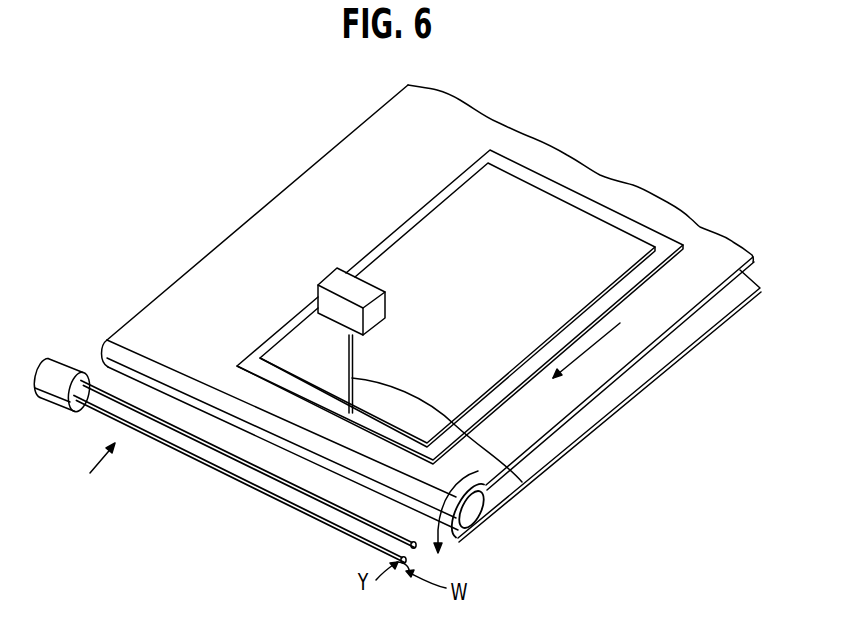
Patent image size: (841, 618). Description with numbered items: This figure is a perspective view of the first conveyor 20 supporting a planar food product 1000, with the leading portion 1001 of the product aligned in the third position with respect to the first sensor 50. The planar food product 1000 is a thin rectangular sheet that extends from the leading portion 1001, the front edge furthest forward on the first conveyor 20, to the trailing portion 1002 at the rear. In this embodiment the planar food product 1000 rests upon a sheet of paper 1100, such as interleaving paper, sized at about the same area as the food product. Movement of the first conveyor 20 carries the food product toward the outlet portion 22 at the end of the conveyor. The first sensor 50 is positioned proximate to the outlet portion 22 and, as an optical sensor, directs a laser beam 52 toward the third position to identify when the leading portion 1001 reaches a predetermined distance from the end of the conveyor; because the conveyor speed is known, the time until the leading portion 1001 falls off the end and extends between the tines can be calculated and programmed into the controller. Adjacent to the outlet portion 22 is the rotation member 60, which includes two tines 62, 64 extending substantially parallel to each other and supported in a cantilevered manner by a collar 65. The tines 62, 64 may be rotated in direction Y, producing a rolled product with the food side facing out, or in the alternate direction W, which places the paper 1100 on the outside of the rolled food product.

The planar food product 1000 is at (556, 399).
The leading portion 1001 is at (409, 307).
The trailing portion 1002 is at (457, 296).
The sheet of paper 1100 is at (430, 212).
The first sensor 50 is at (323, 283).
The laser beam 52 is at (508, 508).
The first conveyor 20 is at (498, 507).
The outlet portion 22 is at (280, 435).
The first tine 62 is at (248, 465).
The second tine 64 is at (240, 483).
The collar 65 is at (63, 415).
The rotation member 60 is at (90, 474).